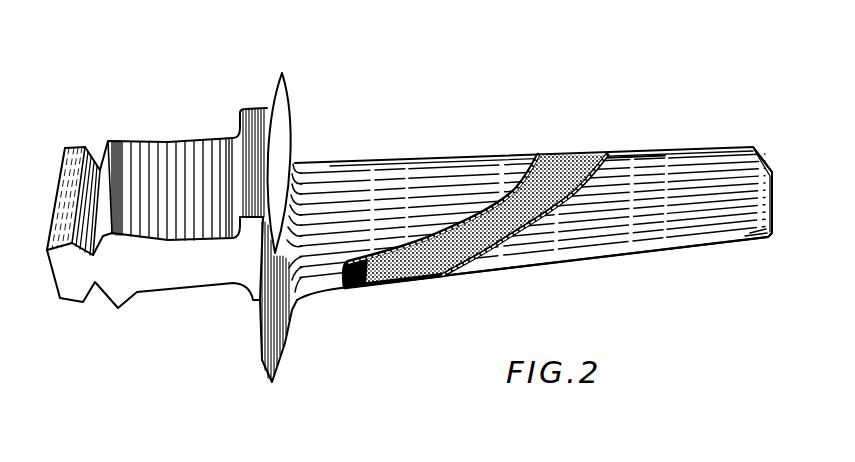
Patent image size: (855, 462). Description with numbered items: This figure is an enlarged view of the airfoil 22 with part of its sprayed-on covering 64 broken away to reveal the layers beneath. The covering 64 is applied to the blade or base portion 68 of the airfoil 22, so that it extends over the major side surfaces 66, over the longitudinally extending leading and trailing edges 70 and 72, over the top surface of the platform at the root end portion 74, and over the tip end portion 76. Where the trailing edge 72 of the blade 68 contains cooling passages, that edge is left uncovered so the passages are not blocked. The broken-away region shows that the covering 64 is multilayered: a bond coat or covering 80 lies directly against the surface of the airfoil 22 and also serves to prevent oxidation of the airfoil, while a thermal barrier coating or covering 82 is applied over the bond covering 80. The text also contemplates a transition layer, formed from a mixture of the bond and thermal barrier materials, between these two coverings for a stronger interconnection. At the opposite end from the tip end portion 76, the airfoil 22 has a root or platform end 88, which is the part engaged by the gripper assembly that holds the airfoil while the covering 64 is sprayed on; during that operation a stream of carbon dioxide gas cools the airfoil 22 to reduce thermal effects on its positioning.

The airfoil 22 is at (415, 217).
The covering 64 is at (535, 211).
The major side surfaces 66 is at (721, 203).
The blade or base portion 68 is at (677, 152).
The leading edge 70 is at (630, 157).
The trailing edge 72 is at (550, 260).
The root end portion 74 is at (330, 173).
The tip end portion 76 is at (770, 177).
The bond coat or covering 80 is at (457, 263).
The thermal barrier coating or covering 82 is at (363, 242).
The root or platform end 88 is at (175, 157).